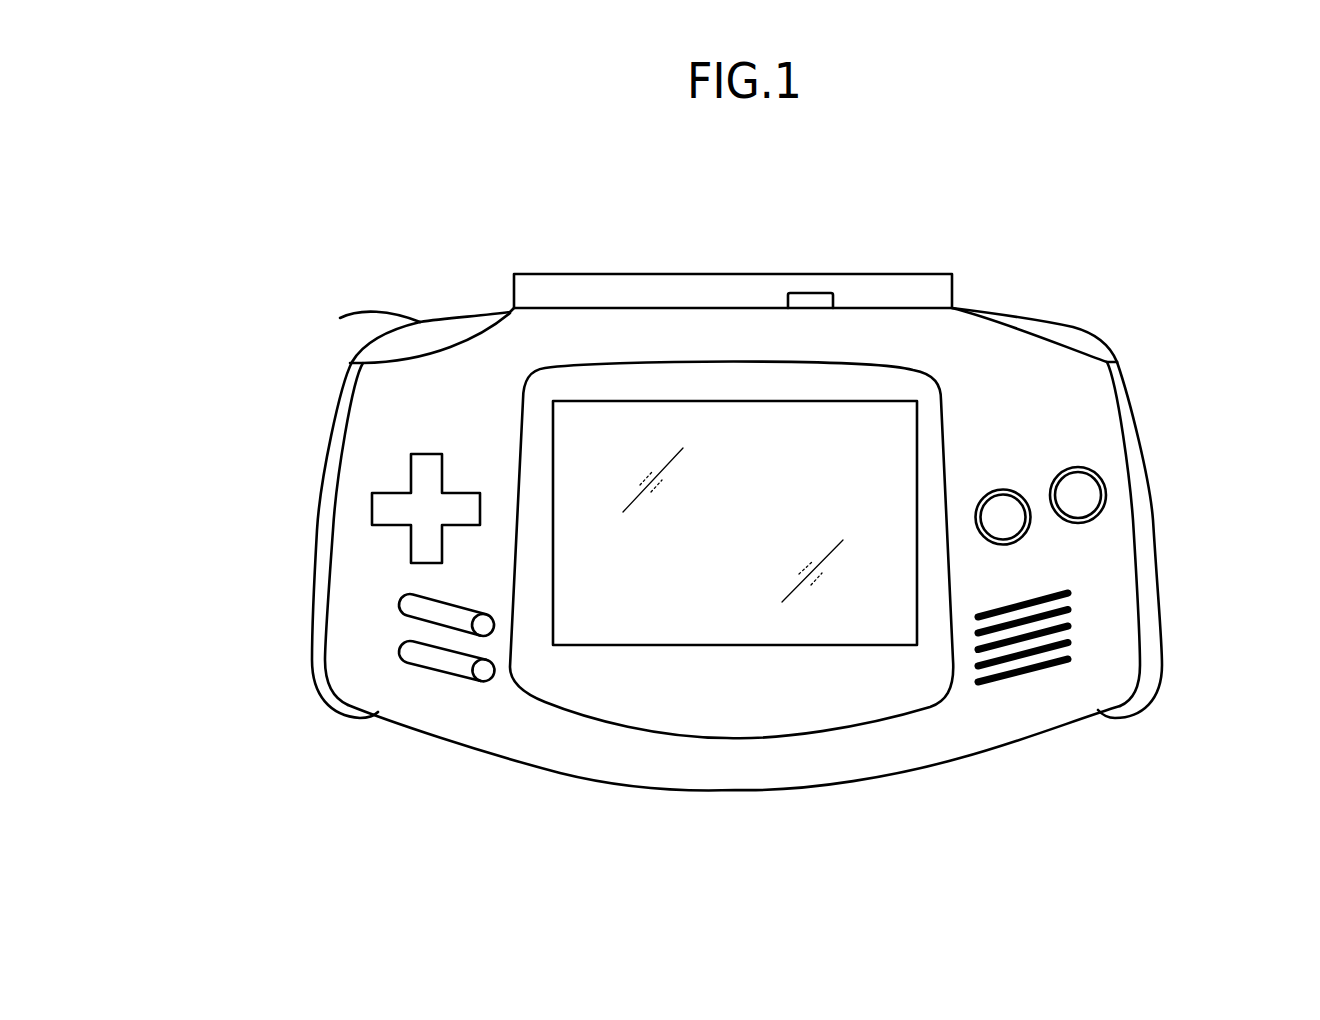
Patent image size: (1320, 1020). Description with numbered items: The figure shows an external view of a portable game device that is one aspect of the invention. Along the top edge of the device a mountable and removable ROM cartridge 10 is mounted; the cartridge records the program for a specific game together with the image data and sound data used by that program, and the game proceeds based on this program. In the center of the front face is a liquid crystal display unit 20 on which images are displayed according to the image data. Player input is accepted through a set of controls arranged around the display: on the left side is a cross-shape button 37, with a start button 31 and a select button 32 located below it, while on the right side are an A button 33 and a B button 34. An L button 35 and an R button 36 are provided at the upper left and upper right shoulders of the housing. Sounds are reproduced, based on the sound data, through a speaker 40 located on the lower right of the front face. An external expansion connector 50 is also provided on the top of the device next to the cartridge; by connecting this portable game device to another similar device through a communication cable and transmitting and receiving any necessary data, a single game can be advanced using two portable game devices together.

The ROM cartridge 10 is at (865, 273).
The liquid crystal display unit 20 is at (837, 628).
The start button 31 is at (480, 623).
The select button 32 is at (482, 670).
The A button 33 is at (1087, 493).
The B button 34 is at (1007, 532).
The L button 35 is at (340, 318).
The R button 36 is at (1067, 333).
The cross-shape button 37 is at (388, 510).
The speaker 40 is at (1027, 658).
The external expansion connector 50 is at (807, 293).